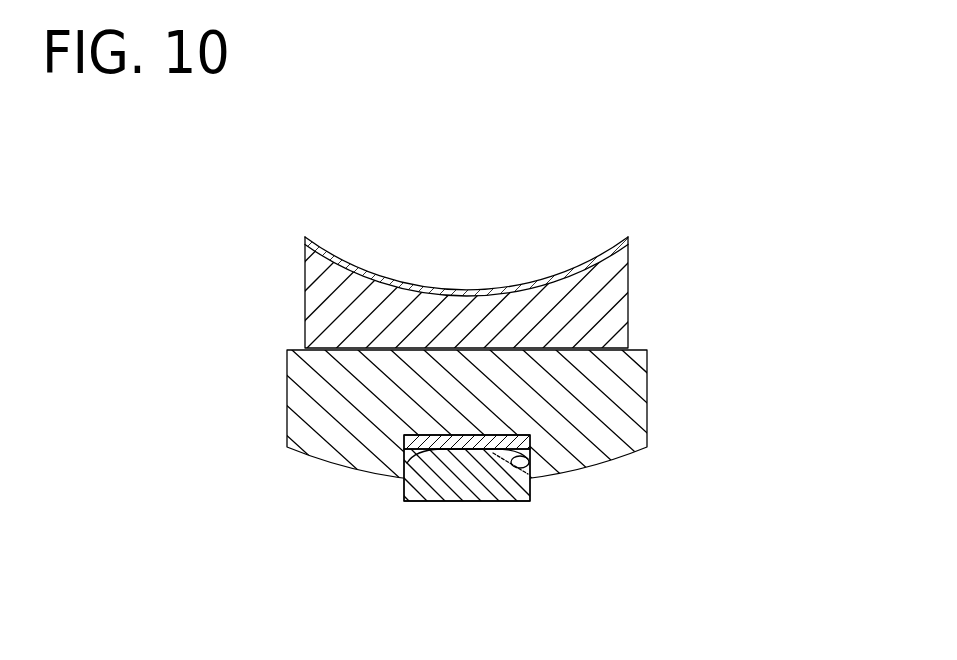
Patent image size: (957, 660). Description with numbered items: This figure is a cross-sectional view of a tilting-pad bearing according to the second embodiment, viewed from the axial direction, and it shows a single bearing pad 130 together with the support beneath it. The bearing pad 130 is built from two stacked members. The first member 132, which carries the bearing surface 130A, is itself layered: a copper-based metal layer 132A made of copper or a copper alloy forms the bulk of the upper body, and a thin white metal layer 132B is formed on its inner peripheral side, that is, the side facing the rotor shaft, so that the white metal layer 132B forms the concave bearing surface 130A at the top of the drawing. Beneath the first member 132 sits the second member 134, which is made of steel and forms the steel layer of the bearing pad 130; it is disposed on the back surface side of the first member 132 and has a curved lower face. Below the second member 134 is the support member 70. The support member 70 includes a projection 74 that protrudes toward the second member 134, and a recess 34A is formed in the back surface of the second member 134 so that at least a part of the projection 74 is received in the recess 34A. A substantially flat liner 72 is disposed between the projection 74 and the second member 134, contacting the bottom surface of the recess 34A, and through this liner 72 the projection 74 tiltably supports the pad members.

The bearing pad 130 is at (520, 315).
The bearing surface 130A is at (438, 289).
The first member 132 is at (500, 241).
The copper-based metal layer 132A is at (600, 308).
The white metal layer 132B is at (490, 217).
The second member 134 is at (486, 423).
The support member 70 is at (502, 535).
The liner 72 is at (436, 440).
The projection 74 is at (502, 519).
The recess 34A is at (528, 477).